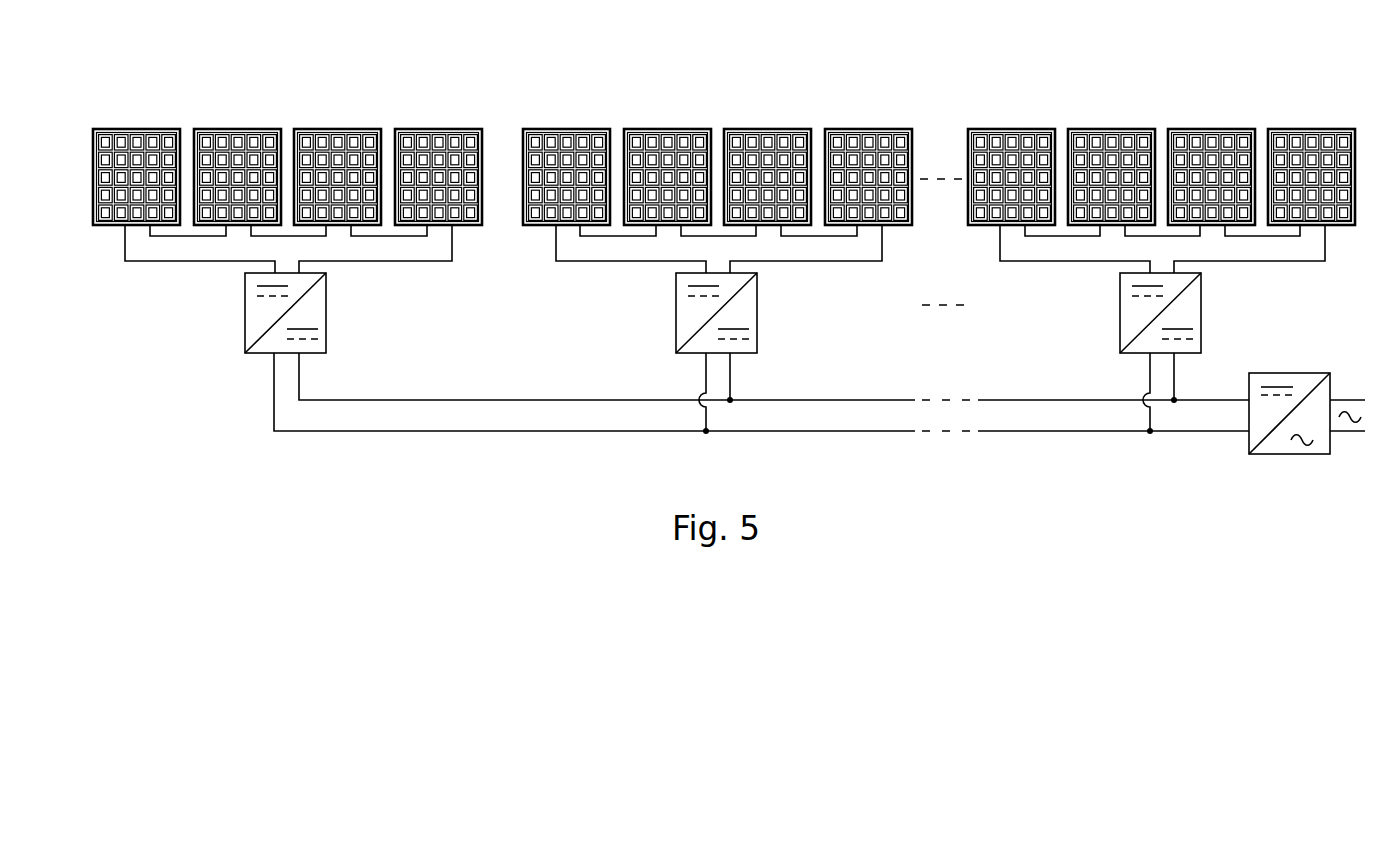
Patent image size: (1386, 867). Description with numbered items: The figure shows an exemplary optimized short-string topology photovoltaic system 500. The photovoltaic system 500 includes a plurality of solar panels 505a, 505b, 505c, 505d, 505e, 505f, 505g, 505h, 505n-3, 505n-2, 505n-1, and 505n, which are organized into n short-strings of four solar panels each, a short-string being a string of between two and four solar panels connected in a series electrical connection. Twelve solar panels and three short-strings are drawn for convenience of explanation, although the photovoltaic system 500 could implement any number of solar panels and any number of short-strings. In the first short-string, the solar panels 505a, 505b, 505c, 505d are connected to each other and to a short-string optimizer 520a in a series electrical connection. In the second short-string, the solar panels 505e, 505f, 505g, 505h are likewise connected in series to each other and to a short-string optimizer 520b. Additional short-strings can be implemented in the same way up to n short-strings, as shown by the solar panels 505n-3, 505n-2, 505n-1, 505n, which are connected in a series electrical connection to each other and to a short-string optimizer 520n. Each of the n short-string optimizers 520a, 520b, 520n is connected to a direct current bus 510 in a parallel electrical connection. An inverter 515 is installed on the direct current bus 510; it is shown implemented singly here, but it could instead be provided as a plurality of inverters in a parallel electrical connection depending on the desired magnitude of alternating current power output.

The photovoltaic system 500 is at (183, 50).
The solar panel 505a is at (133, 129).
The solar panel 505b is at (234, 129).
The solar panel 505c is at (334, 129).
The solar panel 505d is at (435, 129).
The solar panel 505e is at (563, 129).
The solar panel 505f is at (664, 129).
The solar panel 505g is at (764, 129).
The solar panel 505h is at (865, 129).
The solar panel 505n-3 is at (1008, 129).
The solar panel 505n-2 is at (1108, 129).
The solar panel 505n-1 is at (1208, 129).
The solar panel 505n is at (1308, 129).
The short-string optimizer 520a is at (327, 318).
The short-string optimizer 520b is at (757, 318).
The short-string optimizer 520n is at (1200, 318).
The direct current bus 510 is at (328, 431).
The inverter 515 is at (1289, 373).